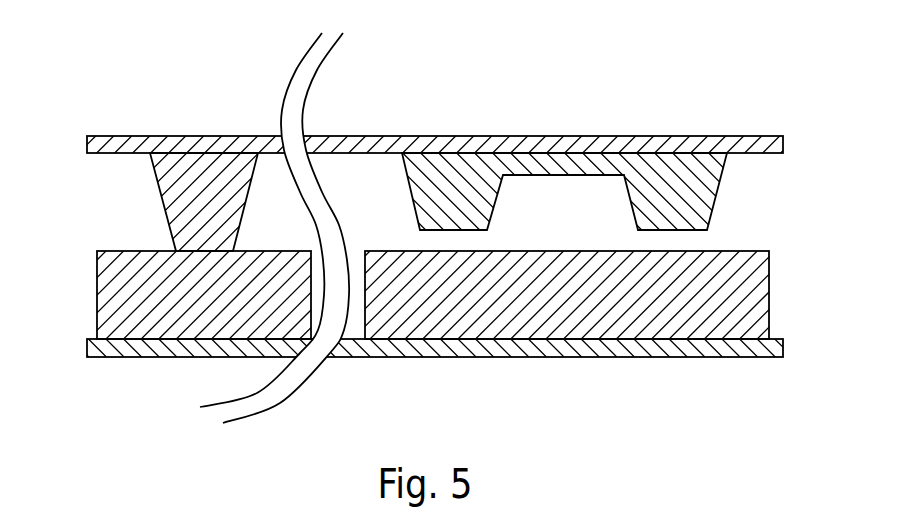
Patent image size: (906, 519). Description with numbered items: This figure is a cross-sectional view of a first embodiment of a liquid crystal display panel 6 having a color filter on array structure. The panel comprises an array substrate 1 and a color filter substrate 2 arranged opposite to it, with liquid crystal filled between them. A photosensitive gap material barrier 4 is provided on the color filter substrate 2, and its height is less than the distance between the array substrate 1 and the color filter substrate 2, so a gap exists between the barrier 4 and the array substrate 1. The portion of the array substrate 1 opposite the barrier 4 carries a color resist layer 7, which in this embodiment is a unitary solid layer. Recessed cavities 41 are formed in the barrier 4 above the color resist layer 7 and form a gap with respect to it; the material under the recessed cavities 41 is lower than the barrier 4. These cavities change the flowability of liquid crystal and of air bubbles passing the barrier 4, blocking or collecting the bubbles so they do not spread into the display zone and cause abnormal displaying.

The circuit board assembly 6 is at (77, 110).
The color filter substrate 2 is at (750, 145).
The photosensitive gap material barrier 4 is at (452, 200).
The recessed cavities 41 is at (570, 203).
The color resist layer 7 is at (694, 308).
The array substrate 1 is at (145, 352).